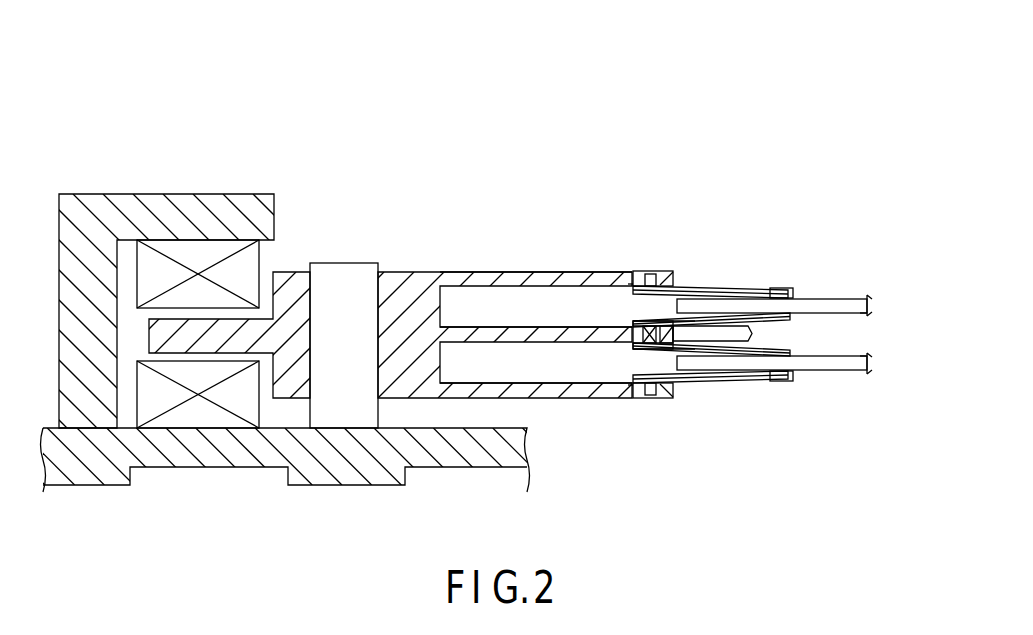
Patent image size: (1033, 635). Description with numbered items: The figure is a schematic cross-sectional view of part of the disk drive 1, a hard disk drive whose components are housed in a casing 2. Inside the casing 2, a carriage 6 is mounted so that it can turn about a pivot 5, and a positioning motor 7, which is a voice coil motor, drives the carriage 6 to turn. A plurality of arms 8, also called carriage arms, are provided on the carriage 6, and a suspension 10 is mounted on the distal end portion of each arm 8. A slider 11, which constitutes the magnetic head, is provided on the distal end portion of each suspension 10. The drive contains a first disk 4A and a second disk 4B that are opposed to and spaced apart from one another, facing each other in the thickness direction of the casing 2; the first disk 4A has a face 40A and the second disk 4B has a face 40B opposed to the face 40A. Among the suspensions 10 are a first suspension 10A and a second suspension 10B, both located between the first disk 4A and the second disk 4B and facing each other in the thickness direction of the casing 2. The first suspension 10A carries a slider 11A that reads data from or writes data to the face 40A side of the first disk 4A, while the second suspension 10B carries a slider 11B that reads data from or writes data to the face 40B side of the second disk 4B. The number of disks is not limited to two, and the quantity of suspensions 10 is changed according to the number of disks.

The disk drive 1 is at (213, 142).
The casing 2 is at (105, 487).
The pivot 5 is at (348, 272).
The carriage 6 is at (492, 262).
The positioning motor 7 is at (197, 417).
The arm 8 is at (585, 270).
The suspension 10 is at (713, 334).
The first suspension 10A is at (758, 312).
The second suspension 10B is at (758, 358).
The slider 11 is at (770, 341).
The slider 11A is at (797, 311).
The slider 11B is at (772, 412).
The first disk 4A is at (848, 298).
The second disk 4B is at (863, 371).
The face 40A is at (865, 314).
The face 40B is at (865, 356).